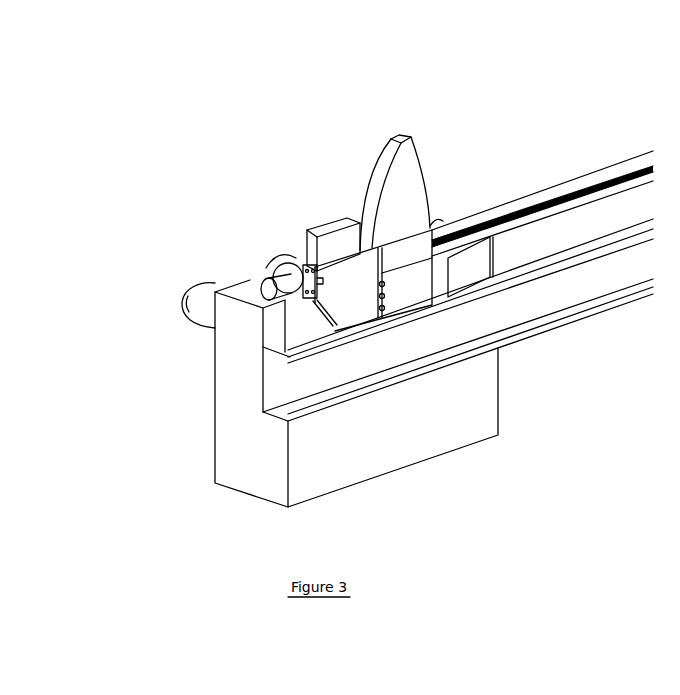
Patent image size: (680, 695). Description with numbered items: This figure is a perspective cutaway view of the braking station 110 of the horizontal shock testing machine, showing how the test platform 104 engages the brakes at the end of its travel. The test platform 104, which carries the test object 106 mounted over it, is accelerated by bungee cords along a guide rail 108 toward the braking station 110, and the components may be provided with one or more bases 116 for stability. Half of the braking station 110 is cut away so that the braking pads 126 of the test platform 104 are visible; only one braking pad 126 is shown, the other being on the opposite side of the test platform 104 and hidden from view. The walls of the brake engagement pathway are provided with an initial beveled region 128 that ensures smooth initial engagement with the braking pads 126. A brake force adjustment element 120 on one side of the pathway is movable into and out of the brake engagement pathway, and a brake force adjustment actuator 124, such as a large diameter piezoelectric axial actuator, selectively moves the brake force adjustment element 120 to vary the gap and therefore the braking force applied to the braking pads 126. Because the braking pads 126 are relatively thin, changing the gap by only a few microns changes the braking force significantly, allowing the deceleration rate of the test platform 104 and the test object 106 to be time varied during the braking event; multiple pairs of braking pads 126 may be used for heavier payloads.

The test platform 104 is at (275, 256).
The test object 106 is at (356, 198).
The guide rail 108 is at (577, 168).
The braking station 110 is at (103, 338).
The base 116 is at (367, 483).
The brake force adjustment element 120 is at (303, 332).
The brake force adjustment actuator 124 is at (225, 268).
The braking pad 126 is at (413, 290).
The initial beveled region 128 is at (468, 269).